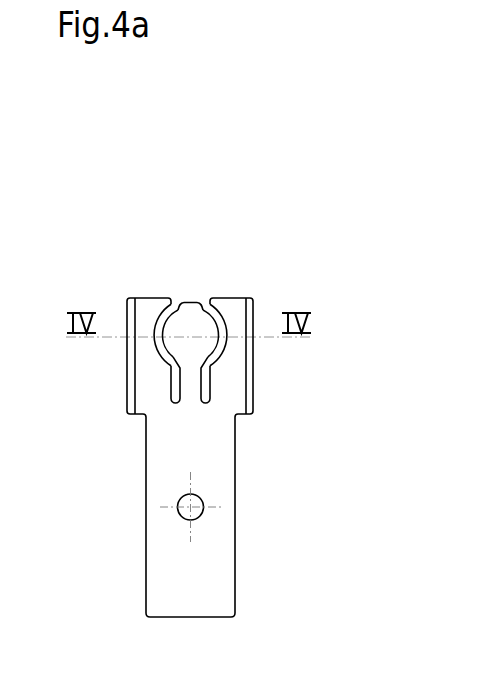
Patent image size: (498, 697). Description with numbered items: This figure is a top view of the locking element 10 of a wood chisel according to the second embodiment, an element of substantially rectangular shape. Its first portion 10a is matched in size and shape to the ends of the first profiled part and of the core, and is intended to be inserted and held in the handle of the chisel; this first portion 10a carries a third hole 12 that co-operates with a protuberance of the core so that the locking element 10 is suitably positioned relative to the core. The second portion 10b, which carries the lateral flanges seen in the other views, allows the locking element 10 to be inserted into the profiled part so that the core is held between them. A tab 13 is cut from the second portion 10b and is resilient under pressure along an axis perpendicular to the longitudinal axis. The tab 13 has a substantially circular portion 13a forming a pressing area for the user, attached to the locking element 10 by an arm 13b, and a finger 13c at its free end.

The locking element 10 is at (364, 227).
The first portion 10a is at (190, 578).
The second portion 10b is at (235, 310).
The third hole 12 is at (178, 508).
The tab 13 is at (227, 332).
The substantially circular portion 13a is at (188, 343).
The arm 13b is at (190, 382).
The finger 13c is at (190, 301).